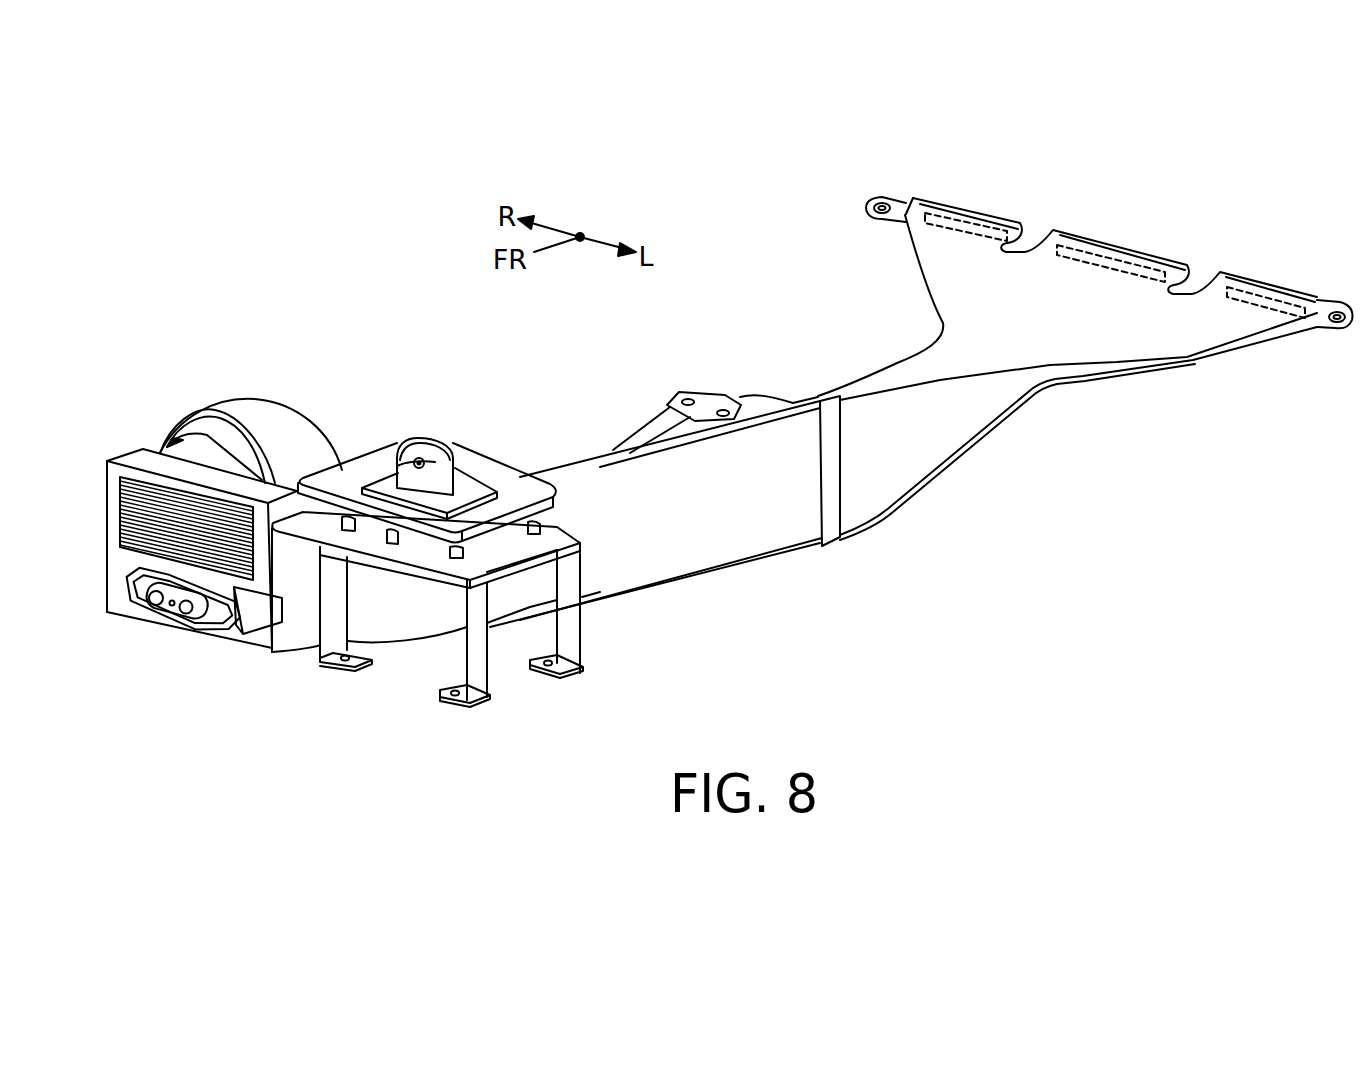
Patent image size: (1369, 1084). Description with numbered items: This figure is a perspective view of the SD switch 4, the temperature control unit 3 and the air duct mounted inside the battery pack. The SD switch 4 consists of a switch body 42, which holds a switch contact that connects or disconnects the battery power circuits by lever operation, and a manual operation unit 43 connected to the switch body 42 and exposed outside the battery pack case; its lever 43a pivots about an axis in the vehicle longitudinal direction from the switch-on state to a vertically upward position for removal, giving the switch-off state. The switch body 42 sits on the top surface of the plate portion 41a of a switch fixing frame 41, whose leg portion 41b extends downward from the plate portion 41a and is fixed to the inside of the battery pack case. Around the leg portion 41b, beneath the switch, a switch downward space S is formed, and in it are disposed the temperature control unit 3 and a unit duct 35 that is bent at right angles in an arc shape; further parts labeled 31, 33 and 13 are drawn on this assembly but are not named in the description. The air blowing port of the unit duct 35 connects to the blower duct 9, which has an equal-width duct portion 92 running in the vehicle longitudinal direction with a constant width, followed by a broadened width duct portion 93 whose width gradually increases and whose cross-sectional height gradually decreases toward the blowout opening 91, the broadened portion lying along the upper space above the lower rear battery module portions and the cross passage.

The temperature control unit 3 is at (240, 385).
The fan motor 31 is at (270, 418).
The vent grille 33 is at (150, 496).
The connector 13 is at (170, 610).
The unit duct 35 is at (390, 627).
The SD switch 4 is at (428, 420).
The manual operation unit 43 is at (503, 486).
The lever 43a is at (396, 452).
The switch fixing frame 41 is at (595, 553).
The plate portion 41a is at (485, 556).
The leg portion 41b is at (314, 643).
The switch body 42 is at (427, 540).
The switch downward space S is at (428, 662).
The blower duct 9 is at (785, 333).
The blowout opening 91 is at (958, 222).
The equal-width duct portion 92 is at (695, 535).
The broadened width duct portion 93 is at (935, 455).